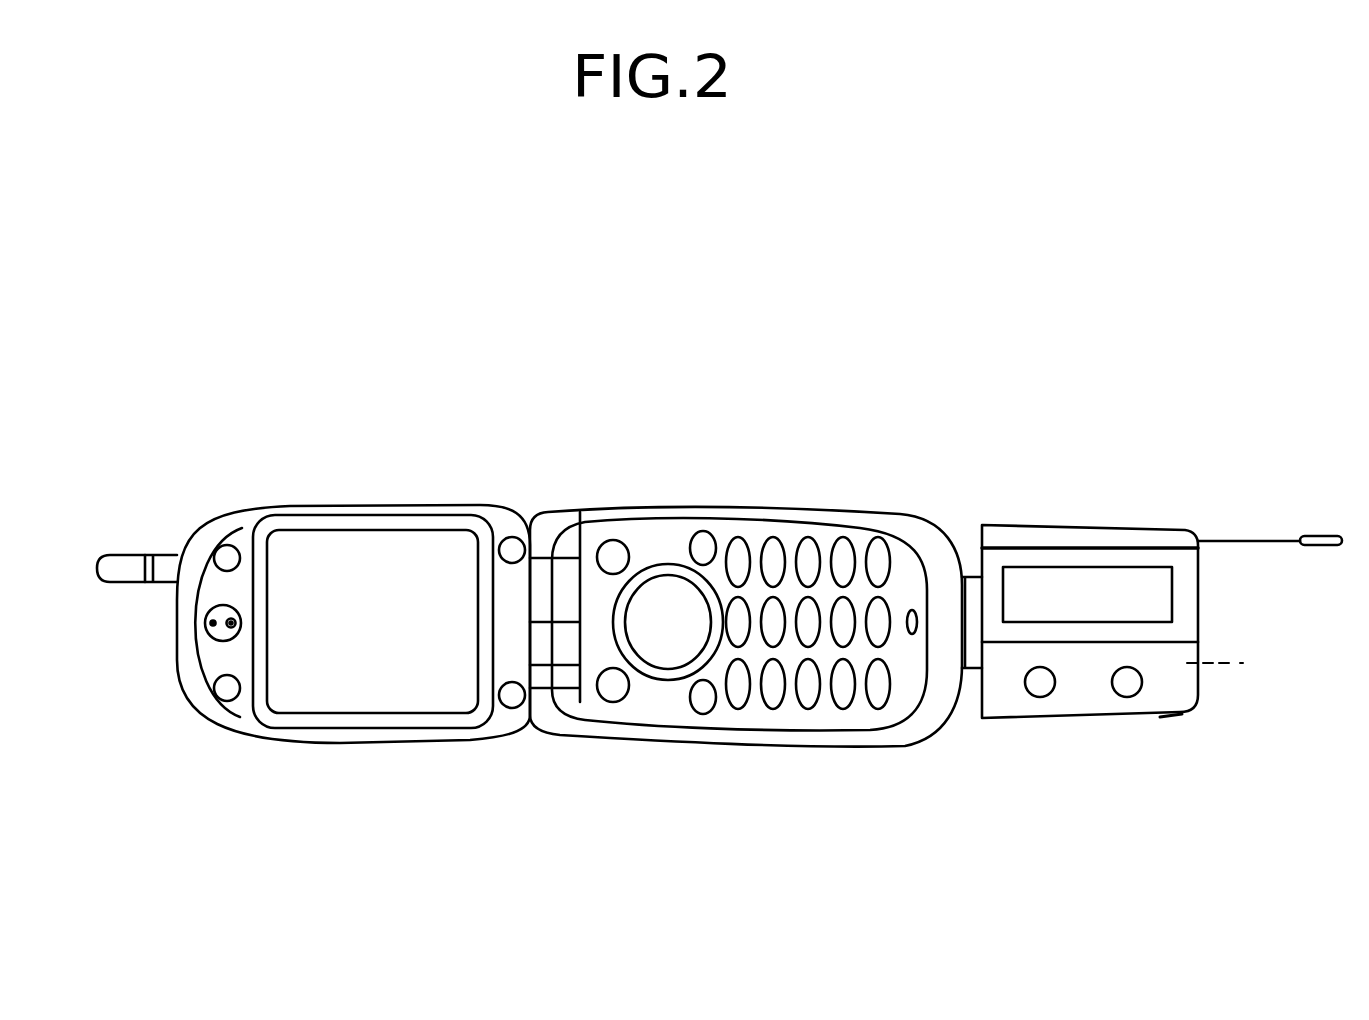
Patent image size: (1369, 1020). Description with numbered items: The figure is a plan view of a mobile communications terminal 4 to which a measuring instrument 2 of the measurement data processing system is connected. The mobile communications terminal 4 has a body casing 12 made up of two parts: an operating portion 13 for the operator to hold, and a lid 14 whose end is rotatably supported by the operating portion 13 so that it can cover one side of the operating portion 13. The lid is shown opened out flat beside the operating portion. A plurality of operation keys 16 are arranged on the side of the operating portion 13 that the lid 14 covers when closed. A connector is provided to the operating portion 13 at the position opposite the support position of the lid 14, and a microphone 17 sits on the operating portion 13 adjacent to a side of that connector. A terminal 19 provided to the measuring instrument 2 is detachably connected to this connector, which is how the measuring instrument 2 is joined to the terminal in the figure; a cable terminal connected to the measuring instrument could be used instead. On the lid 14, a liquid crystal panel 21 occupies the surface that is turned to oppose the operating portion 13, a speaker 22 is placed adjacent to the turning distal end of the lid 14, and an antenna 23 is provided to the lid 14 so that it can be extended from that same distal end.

The measuring instrument 2 is at (1078, 524).
The mobile communications terminal 4 is at (632, 358).
The body casing 12 is at (608, 421).
The operating portion 13 is at (580, 513).
The lid 14 is at (500, 512).
The operation keys 16 is at (666, 605).
The microphone 17 is at (916, 626).
The terminal 19 is at (973, 577).
The liquid crystal panel 21 is at (373, 560).
The speaker 22 is at (230, 628).
The antenna 23 is at (118, 562).